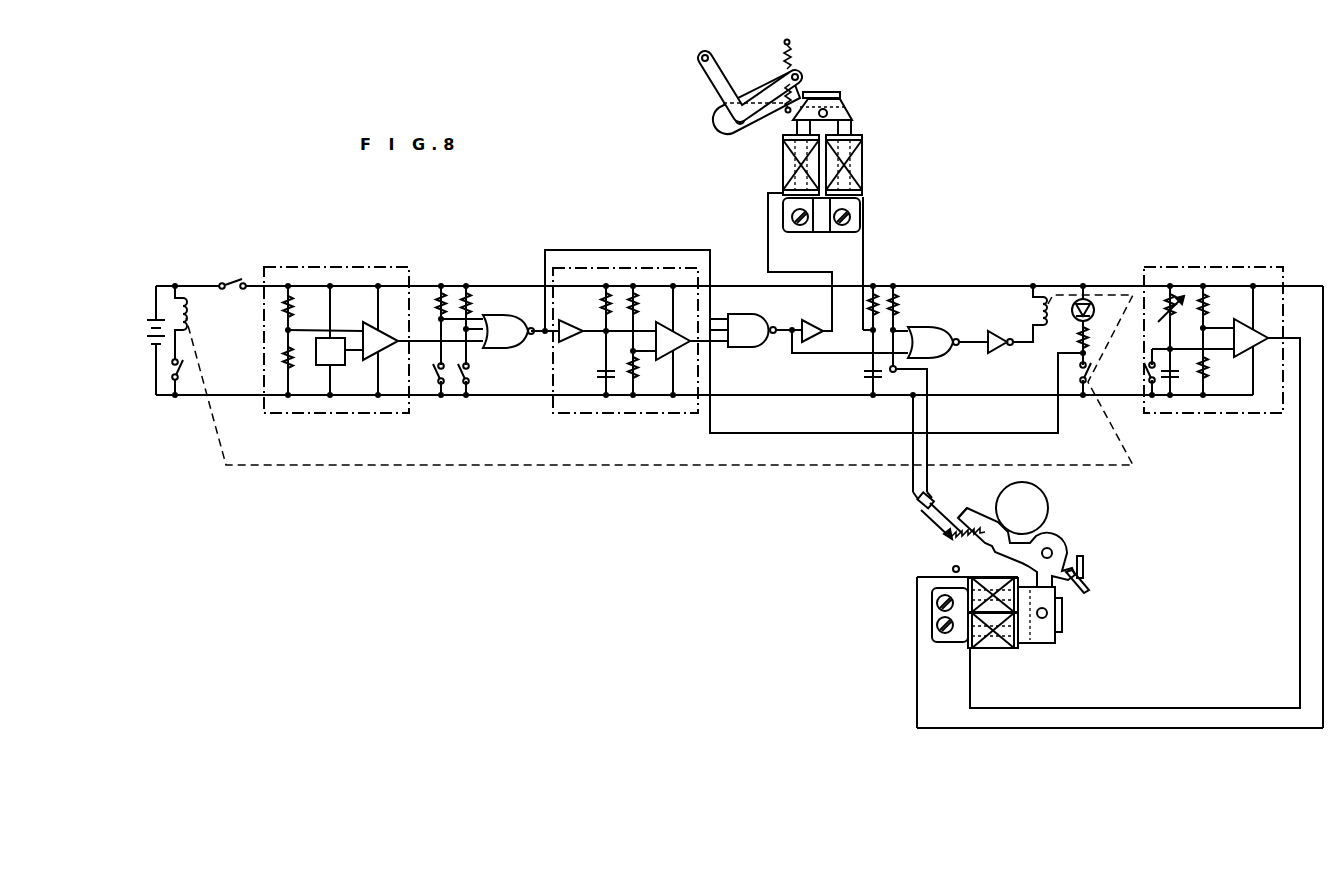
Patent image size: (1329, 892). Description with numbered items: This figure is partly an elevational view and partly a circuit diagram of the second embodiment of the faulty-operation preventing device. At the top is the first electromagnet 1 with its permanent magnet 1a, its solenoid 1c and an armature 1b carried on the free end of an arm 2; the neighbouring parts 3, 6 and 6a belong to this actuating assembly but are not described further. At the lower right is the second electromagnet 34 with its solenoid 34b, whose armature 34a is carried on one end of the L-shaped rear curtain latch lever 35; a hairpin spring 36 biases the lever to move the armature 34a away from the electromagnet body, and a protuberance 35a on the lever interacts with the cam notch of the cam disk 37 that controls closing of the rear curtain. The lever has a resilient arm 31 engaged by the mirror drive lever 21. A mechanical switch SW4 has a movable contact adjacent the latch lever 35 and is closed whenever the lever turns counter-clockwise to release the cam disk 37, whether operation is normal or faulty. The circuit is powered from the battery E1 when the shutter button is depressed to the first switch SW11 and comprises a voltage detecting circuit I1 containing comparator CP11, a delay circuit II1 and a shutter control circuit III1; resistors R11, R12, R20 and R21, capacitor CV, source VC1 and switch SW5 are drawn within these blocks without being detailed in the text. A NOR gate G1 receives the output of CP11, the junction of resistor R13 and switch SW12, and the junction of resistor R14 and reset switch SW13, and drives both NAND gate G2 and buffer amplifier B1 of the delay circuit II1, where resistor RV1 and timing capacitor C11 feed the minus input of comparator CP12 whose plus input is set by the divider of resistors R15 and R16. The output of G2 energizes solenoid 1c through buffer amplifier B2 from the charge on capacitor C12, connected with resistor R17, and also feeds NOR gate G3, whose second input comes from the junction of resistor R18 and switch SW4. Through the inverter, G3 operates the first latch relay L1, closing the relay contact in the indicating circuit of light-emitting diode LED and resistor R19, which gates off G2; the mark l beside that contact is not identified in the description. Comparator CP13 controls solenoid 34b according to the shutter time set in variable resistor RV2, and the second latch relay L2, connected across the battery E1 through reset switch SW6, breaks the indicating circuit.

The first electromagnet 1 is at (850, 206).
The permanent magnet 1a is at (821, 226).
The armature 1b is at (848, 114).
The solenoid 1c is at (862, 165).
The arm 2 is at (770, 128).
The spring 3 is at (795, 62).
The lever 6 is at (716, 90).
The lever end 6a is at (700, 60).
The mirror drive lever 21 is at (1084, 574).
The resilient arm 31 is at (1086, 594).
The second electromagnet 34 is at (962, 630).
The armature 34a is at (1040, 630).
The solenoid 34b is at (998, 640).
The L-shaped lever 35 is at (1052, 541).
The protuberance 35a is at (990, 528).
The hairpin spring 36 is at (960, 552).
The cam disk 37 is at (1035, 512).
The battery E1 is at (162, 324).
The first latch relay L1 is at (1040, 318).
The second latch relay L2 is at (191, 323).
The mechanical switch SW4 is at (930, 517).
The switch SW5 is at (1117, 380).
The reset control switch SW6 is at (183, 372).
The first switch SW11 is at (237, 275).
The switch SW12 is at (434, 378).
The switch SW13 is at (486, 379).
The resistor R11 is at (303, 308).
The resistor R12 is at (303, 362).
The resistor R13 is at (431, 325).
The resistor R14 is at (480, 325).
The resistor R15 is at (648, 318).
The resistor R16 is at (648, 373).
The resistor R17 is at (878, 300).
The resistor R18 is at (908, 329).
The resistor R19 is at (1071, 345).
The resistor R20 is at (1217, 307).
The resistor R21 is at (1217, 361).
The resistor RV1 is at (594, 308).
The variable resistor RV2 is at (1183, 317).
The timing capacitor C11 is at (596, 363).
The capacitor C12 is at (862, 362).
The capacitor CV is at (1182, 372).
The voltage source VC1 is at (339, 351).
The comparator CP11 is at (385, 350).
The comparator CP12 is at (678, 345).
The comparator CP13 is at (1260, 332).
The buffer amplifier B1 is at (575, 340).
The buffer amplifier B2 is at (815, 322).
The NOR gate G1 is at (508, 331).
The NAND gate G2 is at (752, 330).
The NOR gate G3 is at (933, 342).
The voltage detecting circuit I1 is at (352, 412).
The delay circuit II1 is at (632, 412).
The shutter control circuit III1 is at (1215, 412).
The light-emitting diode LED is at (1100, 308).
The lever l is at (1090, 372).